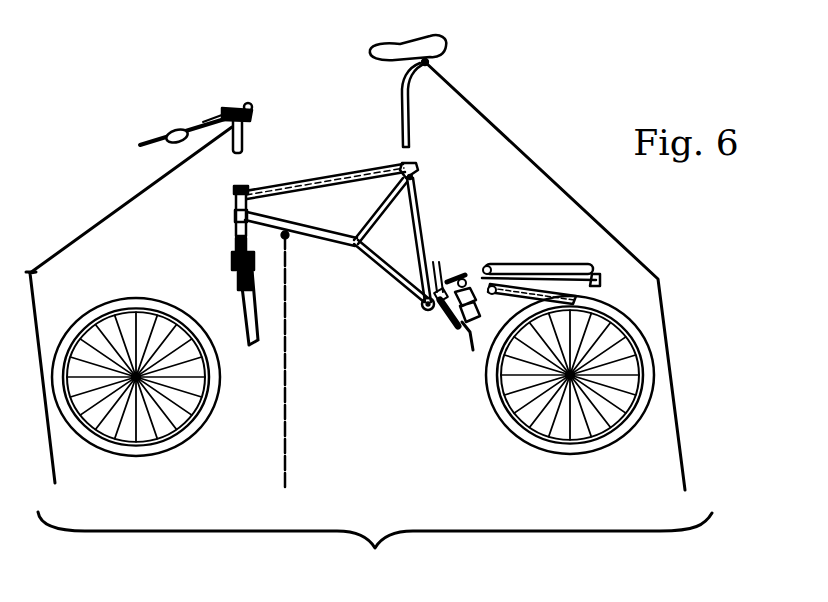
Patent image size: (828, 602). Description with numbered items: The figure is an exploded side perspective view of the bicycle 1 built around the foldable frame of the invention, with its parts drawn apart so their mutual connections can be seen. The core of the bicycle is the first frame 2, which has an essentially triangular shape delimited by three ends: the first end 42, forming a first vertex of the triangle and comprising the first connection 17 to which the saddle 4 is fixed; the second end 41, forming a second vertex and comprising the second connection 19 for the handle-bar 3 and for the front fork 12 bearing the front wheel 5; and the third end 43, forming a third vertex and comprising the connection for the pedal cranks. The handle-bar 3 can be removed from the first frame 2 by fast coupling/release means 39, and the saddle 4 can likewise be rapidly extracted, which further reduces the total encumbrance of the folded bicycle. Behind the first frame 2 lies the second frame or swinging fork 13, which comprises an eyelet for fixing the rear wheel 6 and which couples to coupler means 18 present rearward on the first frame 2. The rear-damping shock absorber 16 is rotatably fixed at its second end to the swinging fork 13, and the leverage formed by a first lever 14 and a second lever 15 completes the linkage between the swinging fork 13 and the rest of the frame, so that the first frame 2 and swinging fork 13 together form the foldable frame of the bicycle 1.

The bicycle 1 is at (375, 548).
The first frame 2 is at (282, 378).
The handle-bar 3 is at (129, 322).
The saddle 4 is at (559, 292).
The front wheel 5 is at (96, 447).
The rear wheel 6 is at (615, 434).
The front fork 12 is at (237, 340).
The swinging fork 13 is at (473, 350).
The first lever 14 is at (433, 318).
The second lever 15 is at (472, 310).
The rear-damping shock absorber 16 is at (470, 272).
The first connection 17 is at (402, 166).
The coupler means 18 is at (428, 277).
The second connection 19 is at (246, 190).
The fast coupling/release means 39 is at (247, 114).
The second end 41 is at (238, 218).
The first end 42 is at (413, 178).
The third end 43 is at (423, 302).